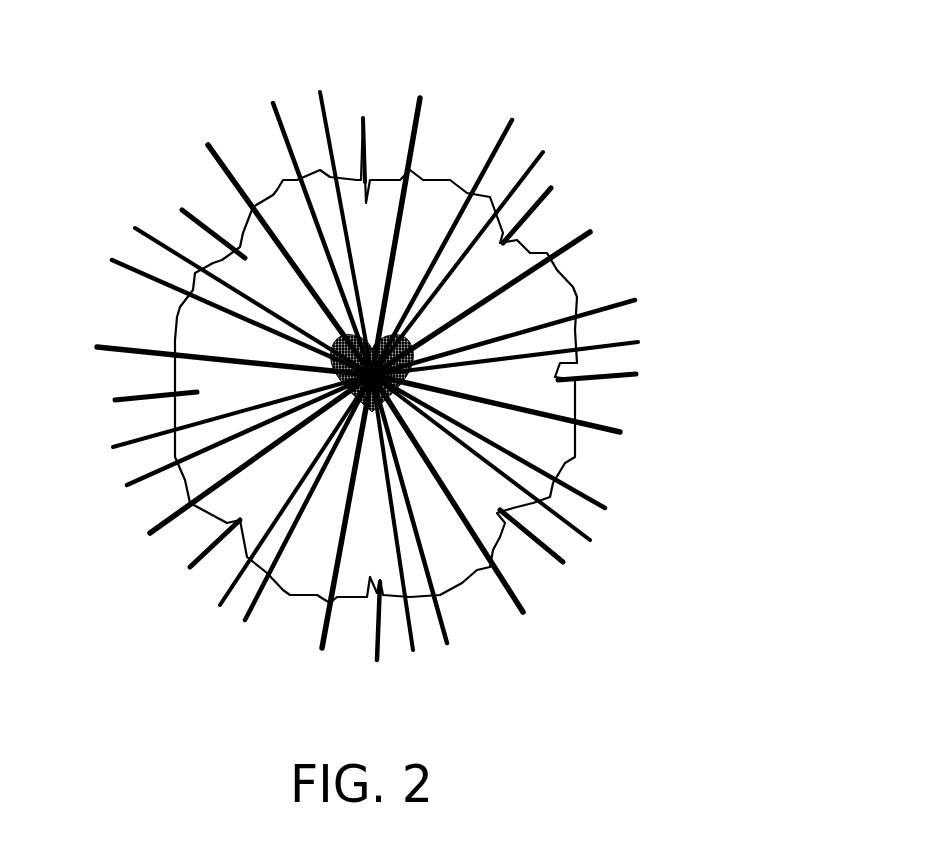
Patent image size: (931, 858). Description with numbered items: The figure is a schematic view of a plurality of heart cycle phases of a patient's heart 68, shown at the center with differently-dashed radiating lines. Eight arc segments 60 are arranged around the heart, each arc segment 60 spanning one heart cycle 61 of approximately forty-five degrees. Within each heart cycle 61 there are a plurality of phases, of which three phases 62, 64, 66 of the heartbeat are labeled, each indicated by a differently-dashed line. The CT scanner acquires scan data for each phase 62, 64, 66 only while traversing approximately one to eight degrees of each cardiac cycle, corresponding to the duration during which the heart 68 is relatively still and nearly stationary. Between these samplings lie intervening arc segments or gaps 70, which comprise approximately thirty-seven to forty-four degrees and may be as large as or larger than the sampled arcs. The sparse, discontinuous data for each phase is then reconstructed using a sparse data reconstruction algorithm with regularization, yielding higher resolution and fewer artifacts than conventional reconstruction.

The arc segment 60 is at (363, 108).
The heart cycle 61 is at (377, 173).
The first heart phase 62 is at (135, 228).
The second heart phase 64 is at (112, 260).
The third heart phase 66 is at (98, 342).
The patient's heart 68 is at (372, 373).
The gap 70 is at (203, 622).